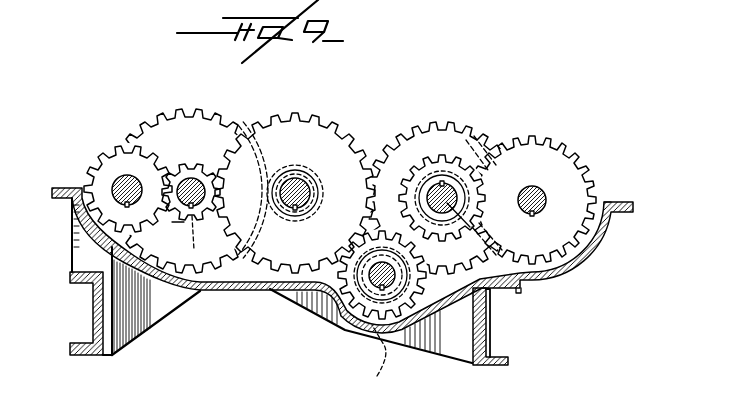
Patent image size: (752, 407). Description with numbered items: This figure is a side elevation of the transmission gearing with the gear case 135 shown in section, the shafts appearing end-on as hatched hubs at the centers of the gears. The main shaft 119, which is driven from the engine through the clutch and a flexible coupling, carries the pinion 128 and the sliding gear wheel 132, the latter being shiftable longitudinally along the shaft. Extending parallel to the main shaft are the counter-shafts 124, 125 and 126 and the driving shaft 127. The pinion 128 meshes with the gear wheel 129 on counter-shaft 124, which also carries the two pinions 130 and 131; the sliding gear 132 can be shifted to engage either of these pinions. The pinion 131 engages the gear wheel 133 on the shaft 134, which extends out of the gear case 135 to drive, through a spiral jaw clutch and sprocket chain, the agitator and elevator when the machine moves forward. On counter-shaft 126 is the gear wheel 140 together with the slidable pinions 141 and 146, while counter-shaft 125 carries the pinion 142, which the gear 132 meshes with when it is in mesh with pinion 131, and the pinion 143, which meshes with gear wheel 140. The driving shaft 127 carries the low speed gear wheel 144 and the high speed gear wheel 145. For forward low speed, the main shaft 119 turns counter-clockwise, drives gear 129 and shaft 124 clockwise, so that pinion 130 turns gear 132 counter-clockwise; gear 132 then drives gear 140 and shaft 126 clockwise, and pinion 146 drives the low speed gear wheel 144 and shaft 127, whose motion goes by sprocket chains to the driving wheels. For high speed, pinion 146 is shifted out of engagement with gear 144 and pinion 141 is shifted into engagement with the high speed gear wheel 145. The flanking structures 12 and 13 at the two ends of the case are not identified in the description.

The left flange member 12 is at (97, 306).
The right flange member 13 is at (491, 328).
The main shaft 119 is at (310, 192).
The counter-shaft 124 is at (188, 177).
The counter-shaft 125 is at (449, 316).
The counter-shaft 126 is at (517, 292).
The driving shaft 127 is at (533, 187).
The pinion 128 is at (298, 169).
The gear wheel 129 is at (217, 122).
The pinion 130 is at (194, 246).
The pinion 131 is at (177, 218).
The sliding gear wheel 132 is at (275, 256).
The gear wheel 133 is at (115, 156).
The shaft 134 is at (117, 183).
The gear case 135 is at (200, 292).
The gear wheel 140 is at (396, 143).
The pinion 141 is at (435, 157).
The pinion 142 is at (356, 326).
The pinion 143 is at (378, 376).
The low speed gear wheel 144 is at (577, 160).
The high speed gear wheel 145 is at (563, 197).
The pinion 146 is at (471, 150).